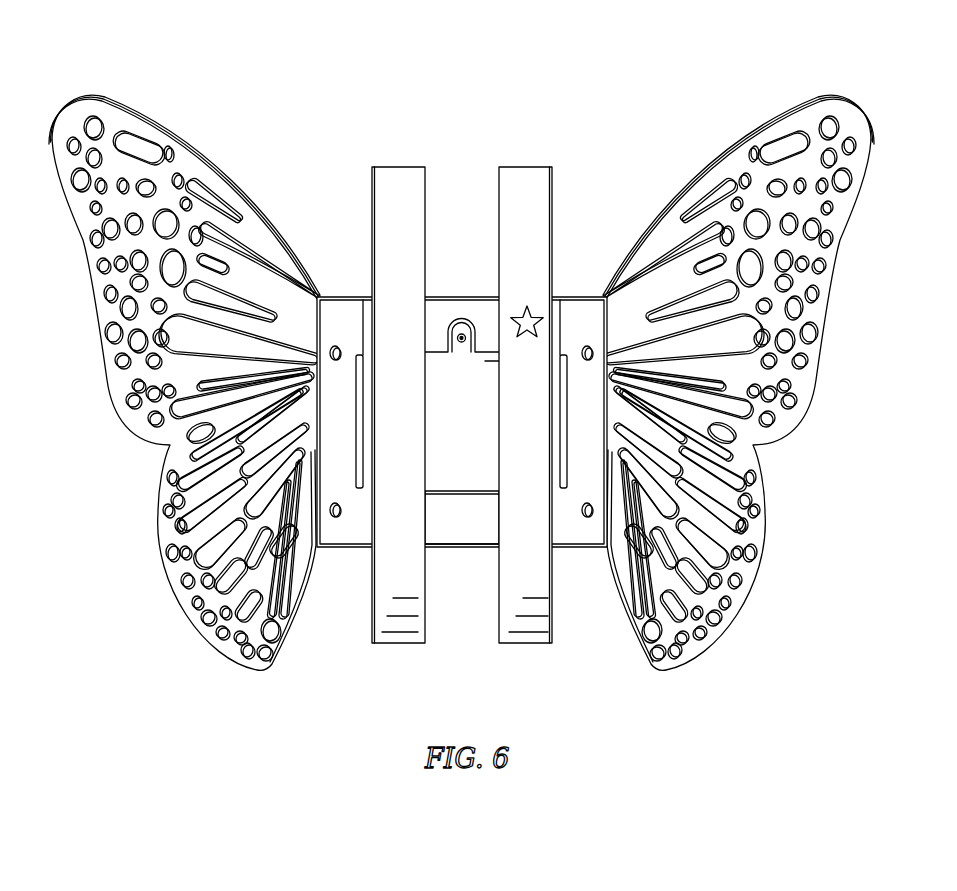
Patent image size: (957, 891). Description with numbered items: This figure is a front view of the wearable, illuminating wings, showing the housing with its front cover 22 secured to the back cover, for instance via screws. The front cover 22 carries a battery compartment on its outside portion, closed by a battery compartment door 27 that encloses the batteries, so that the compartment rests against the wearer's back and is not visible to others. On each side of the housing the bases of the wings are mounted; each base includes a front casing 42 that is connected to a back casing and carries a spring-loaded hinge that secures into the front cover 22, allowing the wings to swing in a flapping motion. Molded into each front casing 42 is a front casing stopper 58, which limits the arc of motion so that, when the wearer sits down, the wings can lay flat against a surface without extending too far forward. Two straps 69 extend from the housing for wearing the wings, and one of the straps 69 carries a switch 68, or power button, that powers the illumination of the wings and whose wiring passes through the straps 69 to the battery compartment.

The front cover 22 is at (485, 534).
The battery compartment door 27 is at (468, 480).
The front casing 42 is at (345, 428).
The front casing stopper 58 is at (361, 470).
The switch 68 is at (536, 318).
The straps 69 is at (525, 168).